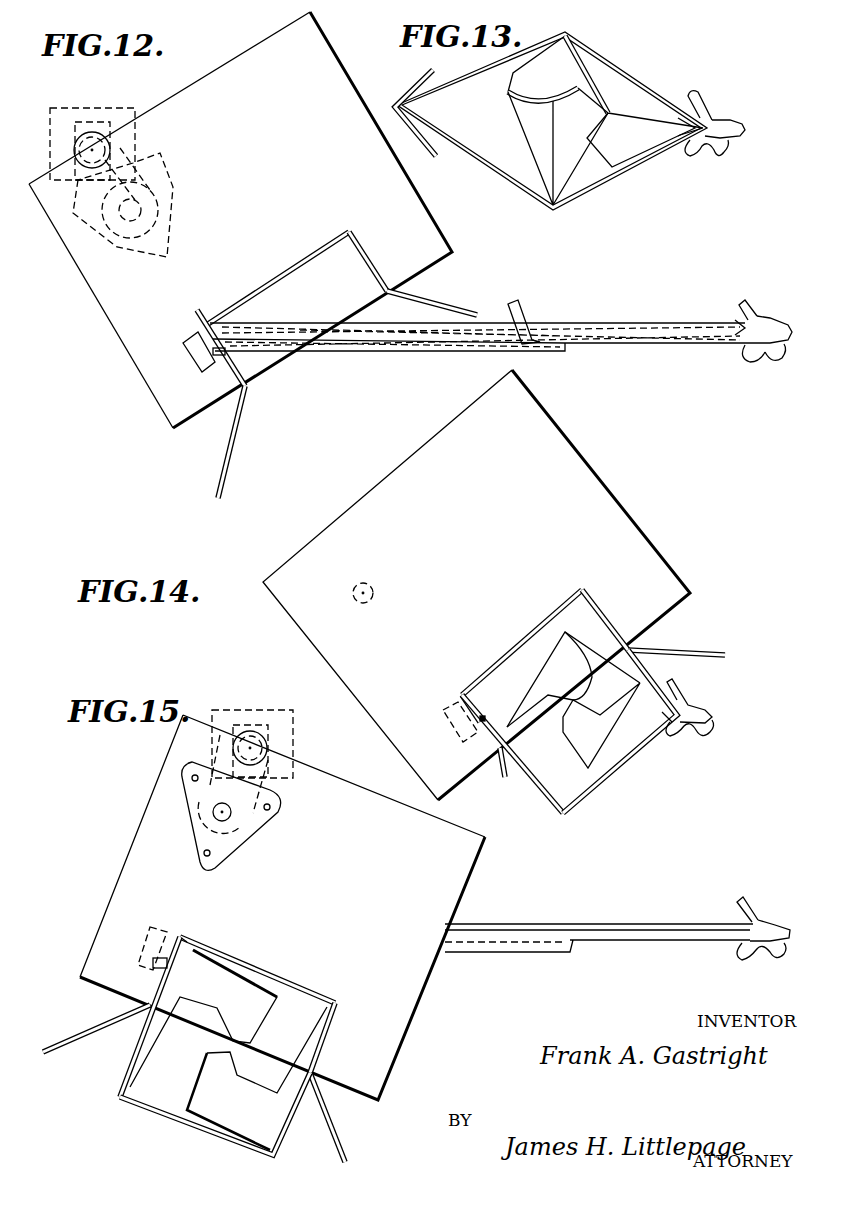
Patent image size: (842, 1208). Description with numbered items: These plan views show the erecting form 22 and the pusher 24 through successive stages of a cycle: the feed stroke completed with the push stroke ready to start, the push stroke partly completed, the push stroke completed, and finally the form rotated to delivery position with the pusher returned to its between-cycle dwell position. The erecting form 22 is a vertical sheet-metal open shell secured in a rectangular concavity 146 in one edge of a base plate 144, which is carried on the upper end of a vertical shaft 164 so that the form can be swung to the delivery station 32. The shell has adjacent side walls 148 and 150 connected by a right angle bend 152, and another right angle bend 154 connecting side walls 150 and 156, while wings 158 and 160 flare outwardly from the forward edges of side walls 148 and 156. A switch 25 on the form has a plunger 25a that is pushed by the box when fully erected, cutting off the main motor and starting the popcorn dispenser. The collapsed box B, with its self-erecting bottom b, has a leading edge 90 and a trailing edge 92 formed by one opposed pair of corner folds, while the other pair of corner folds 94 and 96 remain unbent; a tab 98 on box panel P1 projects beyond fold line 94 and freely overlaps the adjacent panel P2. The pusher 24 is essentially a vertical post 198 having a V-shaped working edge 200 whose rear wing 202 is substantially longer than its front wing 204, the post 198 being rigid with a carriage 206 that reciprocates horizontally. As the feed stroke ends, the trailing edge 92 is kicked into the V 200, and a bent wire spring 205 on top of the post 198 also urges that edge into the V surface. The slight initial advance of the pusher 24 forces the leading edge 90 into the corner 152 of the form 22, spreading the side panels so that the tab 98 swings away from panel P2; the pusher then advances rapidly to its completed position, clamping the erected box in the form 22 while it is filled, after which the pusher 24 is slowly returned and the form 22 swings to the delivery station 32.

In FIG. 12, the erecting form 22 is at (317, 354).
In FIG. 13, the erecting form 22 is at (411, 92).
In FIG. 14, the erecting form 22 is at (568, 685).
In FIG. 15, the erecting form 22 is at (212, 1025).
In FIG. 12, the pusher 24 is at (666, 336).
In FIG. 13, the pusher 24 is at (730, 129).
In FIG. 14, the pusher 24 is at (719, 716).
In FIG. 15, the pusher 24 is at (771, 933).
In FIG. 12, the switch 25 is at (196, 352).
In FIG. 14, the switch 25 is at (448, 720).
In FIG. 15, the switch 25 is at (148, 932).
In FIG. 12, the plunger 25a is at (206, 324).
In FIG. 14, the plunger 25a is at (462, 692).
In FIG. 15, the plunger 25a is at (165, 940).
In FIG. 15, the delivery station 32 is at (133, 1033).
In FIG. 12, the leading edge 90 is at (248, 324).
In FIG. 13, the leading edge 90 is at (420, 104).
In FIG. 14, the leading edge 90 is at (483, 692).
In FIG. 12, the trailing edge 92 is at (507, 305).
In FIG. 13, the trailing edge 92 is at (684, 120).
In FIG. 14, the trailing edge 92 is at (684, 730).
In FIG. 13, the corner fold 94 is at (558, 200).
In FIG. 14, the corner fold 94 is at (565, 800).
In FIG. 15, the corner fold 94 is at (128, 1095).
In FIG. 13, the corner fold 96 is at (563, 52).
In FIG. 14, the corner fold 96 is at (582, 604).
In FIG. 15, the corner fold 96 is at (320, 1010).
In FIG. 13, the tab 98 is at (560, 208).
In FIG. 14, the tab 98 is at (568, 814).
In FIG. 15, the tab 98 is at (118, 1100).
In FIG. 12, the base plate 144 is at (133, 338).
In FIG. 12, the rectangular concavity 146 is at (245, 380).
In FIG. 12, the side wall 148 is at (232, 367).
In FIG. 14, the side wall 148 is at (490, 736).
In FIG. 15, the side wall 148 is at (150, 992).
In FIG. 12, the side wall 150 is at (243, 302).
In FIG. 14, the side wall 150 is at (502, 655).
In FIG. 15, the side wall 150 is at (220, 955).
In FIG. 14, the right angle bend 152 is at (462, 692).
In FIG. 15, the right angle bend 152 is at (184, 940).
In FIG. 12, the right angle bend 154 is at (349, 232).
In FIG. 14, the right angle bend 154 is at (584, 588).
In FIG. 15, the right angle bend 154 is at (340, 1002).
In FIG. 12, the side wall 156 is at (368, 262).
In FIG. 14, the side wall 156 is at (612, 622).
In FIG. 15, the side wall 156 is at (330, 1033).
In FIG. 12, the wing 158 is at (425, 301).
In FIG. 14, the wing 158 is at (684, 646).
In FIG. 15, the wing 158 is at (330, 1112).
In FIG. 12, the wing 160 is at (228, 445).
In FIG. 14, the wing 160 is at (499, 768).
In FIG. 15, the wing 160 is at (82, 1032).
In FIG. 12, the vertical shaft 164 is at (100, 112).
In FIG. 15, the vertical shaft 164 is at (262, 720).
In FIG. 12, the vertical post 198 is at (790, 332).
In FIG. 13, the vertical post 198 is at (746, 128).
In FIG. 14, the vertical post 198 is at (716, 717).
In FIG. 15, the vertical post 198 is at (776, 926).
In FIG. 13, the V-shaped working edge 200 is at (686, 98).
In FIG. 12, the rear wing 202 is at (744, 302).
In FIG. 13, the rear wing 202 is at (704, 100).
In FIG. 15, the rear wing 202 is at (742, 900).
In FIG. 12, the front wing 204 is at (746, 356).
In FIG. 13, the front wing 204 is at (712, 158).
In FIG. 15, the front wing 204 is at (770, 958).
In FIG. 12, the bent wire spring 205 is at (776, 366).
In FIG. 13, the bent wire spring 205 is at (732, 148).
In FIG. 14, the bent wire spring 205 is at (708, 732).
In FIG. 15, the bent wire spring 205 is at (768, 964).
In FIG. 15, the carriage 206 is at (570, 925).
In FIG. 12, the collapsed box B is at (480, 325).
In FIG. 14, the collapsed box B is at (580, 719).
In FIG. 15, the collapsed box B is at (202, 1052).
In FIG. 13, the self-erecting bottom b is at (486, 142).
In FIG. 14, the self-erecting bottom b is at (554, 684).
In FIG. 15, the self-erecting bottom b is at (266, 1068).
In FIG. 13, the box panel P1 is at (552, 126).
In FIG. 15, the box panel P1 is at (142, 1062).
In FIG. 13, the box panel P2 is at (621, 180).
In FIG. 14, the box panel P2 is at (626, 755).
In FIG. 15, the box panel P2 is at (212, 1128).